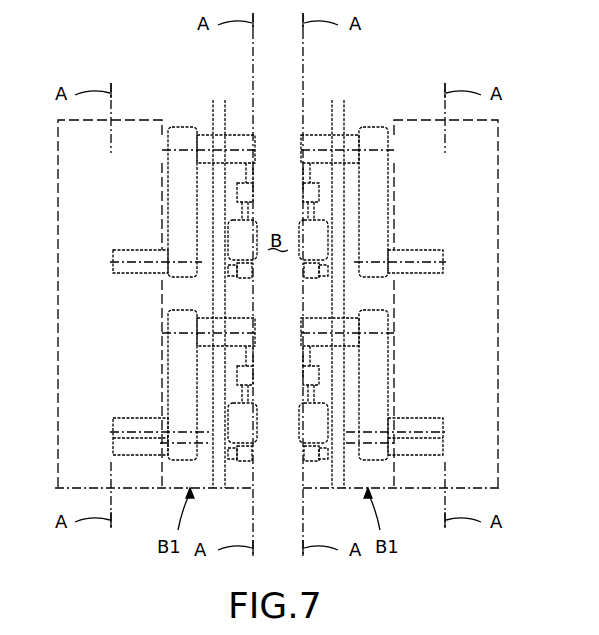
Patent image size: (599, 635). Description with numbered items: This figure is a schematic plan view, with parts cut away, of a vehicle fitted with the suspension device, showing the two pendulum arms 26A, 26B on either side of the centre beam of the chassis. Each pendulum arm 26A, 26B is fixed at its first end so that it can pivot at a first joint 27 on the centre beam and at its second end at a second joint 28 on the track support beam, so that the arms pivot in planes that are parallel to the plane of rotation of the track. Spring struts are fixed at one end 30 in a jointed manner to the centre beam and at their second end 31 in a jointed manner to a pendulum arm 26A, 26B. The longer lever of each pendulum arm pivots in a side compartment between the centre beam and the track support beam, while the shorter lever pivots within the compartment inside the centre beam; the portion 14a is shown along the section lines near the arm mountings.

The guide rail 14a is at (214, 110).
The first pendulum arm 26A is at (185, 205).
The second pendulum arm 26B is at (185, 385).
The first joint 27 is at (224, 152).
The second joint 28 is at (150, 252).
The spring strut end 30 is at (305, 272).
The spring strut second end 31 is at (303, 195).